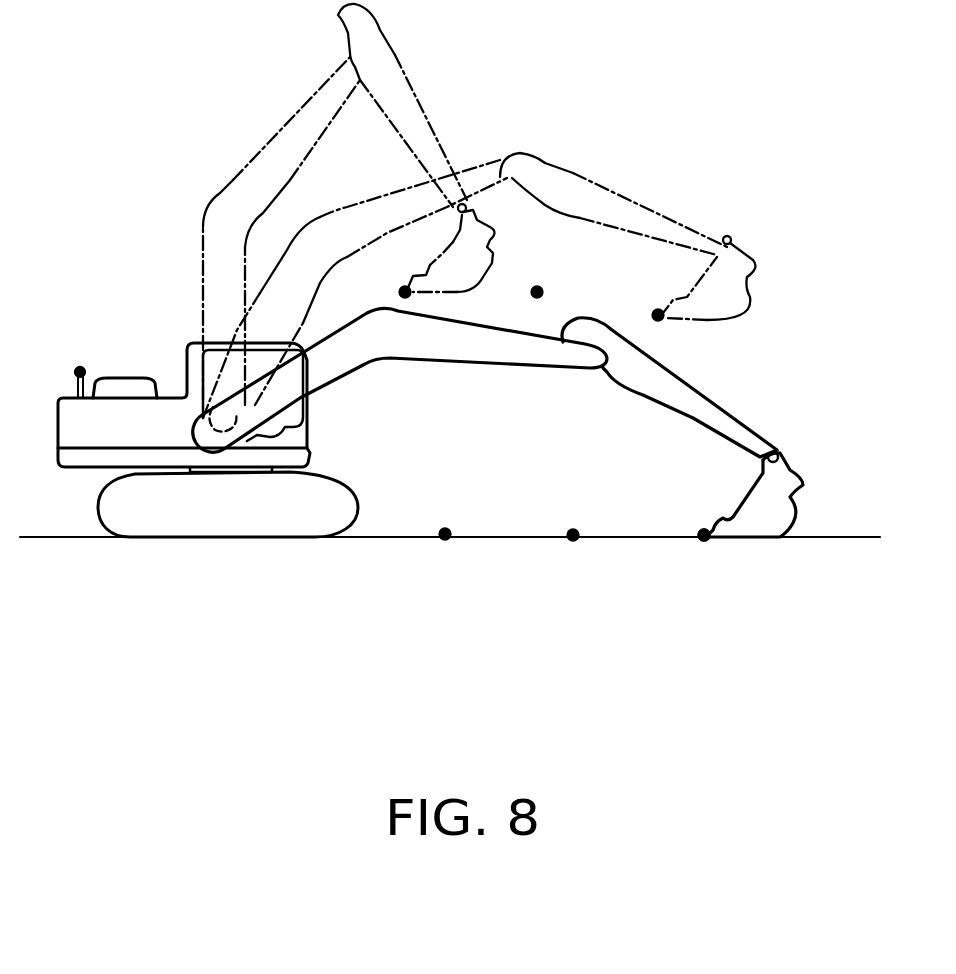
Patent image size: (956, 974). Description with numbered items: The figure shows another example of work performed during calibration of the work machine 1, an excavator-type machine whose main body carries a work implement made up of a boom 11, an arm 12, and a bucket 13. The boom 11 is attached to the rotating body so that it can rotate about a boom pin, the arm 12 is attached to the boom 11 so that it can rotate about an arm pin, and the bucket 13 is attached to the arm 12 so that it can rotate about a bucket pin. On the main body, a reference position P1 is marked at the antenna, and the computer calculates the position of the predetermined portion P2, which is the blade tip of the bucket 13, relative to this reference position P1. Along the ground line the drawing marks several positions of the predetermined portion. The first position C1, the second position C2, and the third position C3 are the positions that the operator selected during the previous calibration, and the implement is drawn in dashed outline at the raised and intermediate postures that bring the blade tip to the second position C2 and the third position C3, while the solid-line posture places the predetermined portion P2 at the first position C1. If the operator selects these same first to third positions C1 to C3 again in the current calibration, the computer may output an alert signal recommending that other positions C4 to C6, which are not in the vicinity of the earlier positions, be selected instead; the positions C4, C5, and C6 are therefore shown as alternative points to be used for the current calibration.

The work machine 1 is at (138, 279).
The boom 11 is at (367, 358).
The arm 12 is at (640, 393).
The bucket 13 is at (773, 523).
The reference position P1 is at (80, 366).
The predetermined portion P2 is at (703, 533).
The first position C1 is at (707, 543).
The second position C2 is at (656, 309).
The third position C3 is at (398, 292).
The position of the predetermined portion C4 is at (574, 543).
The position of the predetermined portion C5 is at (446, 540).
The position of the predetermined portion C6 is at (537, 286).